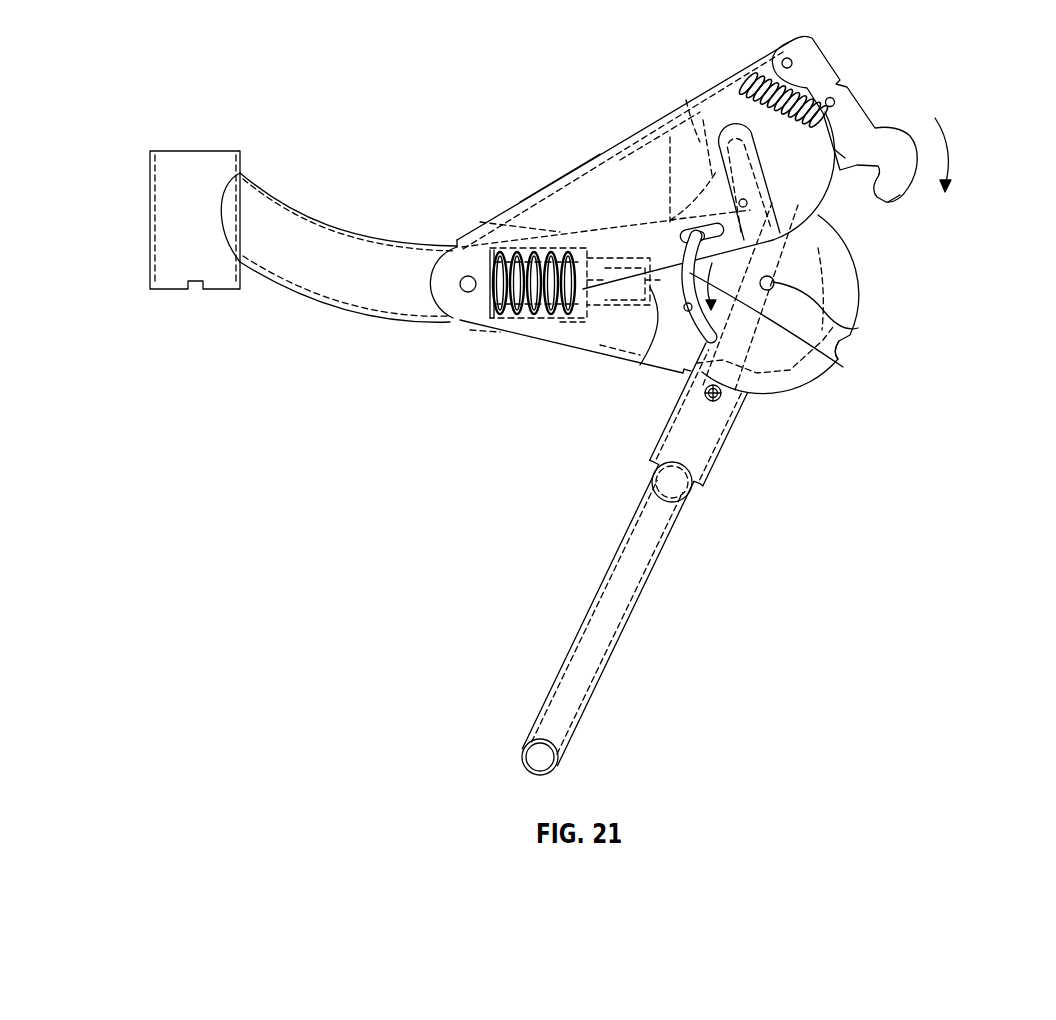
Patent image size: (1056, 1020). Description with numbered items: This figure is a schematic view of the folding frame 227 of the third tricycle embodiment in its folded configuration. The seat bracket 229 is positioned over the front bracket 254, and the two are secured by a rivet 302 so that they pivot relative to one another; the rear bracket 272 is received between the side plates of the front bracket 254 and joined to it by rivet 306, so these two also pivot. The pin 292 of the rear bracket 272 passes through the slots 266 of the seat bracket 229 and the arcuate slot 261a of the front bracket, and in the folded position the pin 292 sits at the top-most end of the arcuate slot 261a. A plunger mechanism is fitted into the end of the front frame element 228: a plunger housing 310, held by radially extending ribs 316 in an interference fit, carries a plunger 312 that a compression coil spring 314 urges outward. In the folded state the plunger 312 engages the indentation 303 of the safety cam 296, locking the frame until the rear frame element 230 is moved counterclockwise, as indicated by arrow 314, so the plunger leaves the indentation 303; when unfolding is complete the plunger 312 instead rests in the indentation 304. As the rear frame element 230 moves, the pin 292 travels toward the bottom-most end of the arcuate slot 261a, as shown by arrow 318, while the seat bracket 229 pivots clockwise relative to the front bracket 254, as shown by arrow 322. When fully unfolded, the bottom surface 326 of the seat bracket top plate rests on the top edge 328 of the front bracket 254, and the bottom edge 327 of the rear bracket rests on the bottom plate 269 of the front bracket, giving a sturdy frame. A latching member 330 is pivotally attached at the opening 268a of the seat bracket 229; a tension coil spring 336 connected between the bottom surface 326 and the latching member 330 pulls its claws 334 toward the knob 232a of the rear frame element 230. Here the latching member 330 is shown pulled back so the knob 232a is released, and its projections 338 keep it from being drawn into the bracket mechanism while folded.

The frame 227 is at (323, 58).
The front frame element 228 is at (353, 302).
The seat bracket 229 is at (548, 185).
The rear frame element 230 is at (636, 612).
The knob 232a is at (719, 397).
The front bracket 254 is at (818, 382).
The arcuate slot 261a is at (696, 484).
The slot 266 is at (680, 240).
The opening 268a is at (800, 62).
The bottom plate 269 is at (500, 332).
The rear bracket 272 is at (805, 252).
The pin 292 is at (693, 232).
The safety cam 296 is at (722, 140).
The rivet 302 is at (468, 292).
The indentation 303 is at (637, 367).
The indentation 304 is at (828, 242).
The rivet 306 is at (856, 325).
The plunger housing 310 is at (580, 345).
The plunger 312 is at (623, 311).
The compression coil spring 314 is at (530, 320).
The rib 316 is at (480, 222).
The arrow 318 is at (843, 361).
The arrow 322 is at (972, 155).
The bottom surface 326 is at (687, 100).
The bottom edge 327 is at (642, 133).
The top edge 328 is at (838, 155).
The latching member 330 is at (843, 84).
The claw 334 is at (890, 202).
The tension coil spring 336 is at (754, 72).
The projection 338 is at (836, 103).